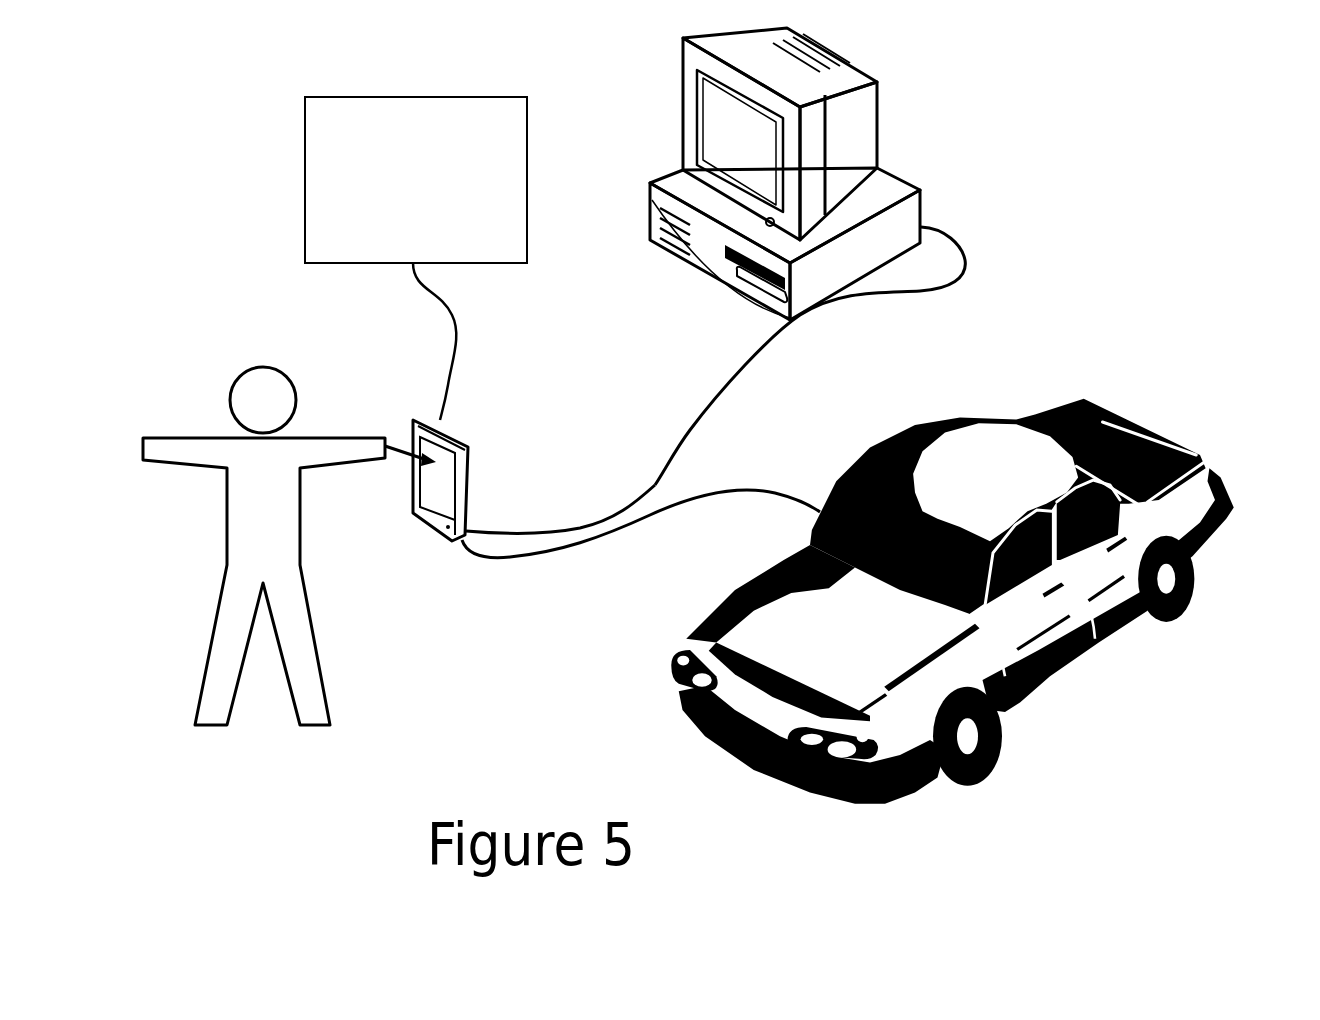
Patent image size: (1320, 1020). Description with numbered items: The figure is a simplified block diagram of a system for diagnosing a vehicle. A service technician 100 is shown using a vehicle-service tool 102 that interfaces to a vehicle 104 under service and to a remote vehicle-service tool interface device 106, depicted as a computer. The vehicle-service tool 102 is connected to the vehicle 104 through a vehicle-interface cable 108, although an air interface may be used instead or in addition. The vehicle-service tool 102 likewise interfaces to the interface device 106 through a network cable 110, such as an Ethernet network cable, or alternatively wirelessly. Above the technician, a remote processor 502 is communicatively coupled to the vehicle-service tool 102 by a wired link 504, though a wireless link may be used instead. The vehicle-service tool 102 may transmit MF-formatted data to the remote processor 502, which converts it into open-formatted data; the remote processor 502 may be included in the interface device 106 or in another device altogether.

The service technician 100 is at (330, 698).
The vehicle-service tool 102 is at (470, 475).
The vehicle 104 is at (1225, 478).
The remote vehicle-service tool interface device 106 is at (920, 190).
The vehicle-interface cable 108 is at (675, 515).
The network cable 110 is at (968, 256).
The remote processor 502 is at (305, 182).
The wired link 504 is at (456, 330).